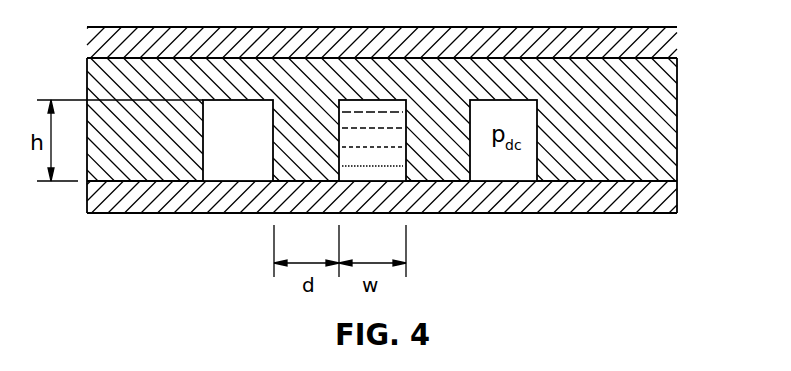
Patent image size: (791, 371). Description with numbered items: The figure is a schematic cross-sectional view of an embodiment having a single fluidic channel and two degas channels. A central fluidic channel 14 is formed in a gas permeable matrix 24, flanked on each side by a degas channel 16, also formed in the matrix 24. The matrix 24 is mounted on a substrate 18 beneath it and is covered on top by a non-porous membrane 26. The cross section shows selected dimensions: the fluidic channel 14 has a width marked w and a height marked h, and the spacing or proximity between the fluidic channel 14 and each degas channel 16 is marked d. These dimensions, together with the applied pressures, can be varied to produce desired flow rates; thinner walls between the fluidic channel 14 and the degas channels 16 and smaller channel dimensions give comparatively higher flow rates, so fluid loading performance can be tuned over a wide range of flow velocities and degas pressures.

The fluidic channel 14 is at (380, 99).
The degas channel 16 is at (213, 118).
The substrate 18 is at (677, 184).
The gas permeable matrix 24 is at (677, 117).
The non-porous membrane 26 is at (677, 46).